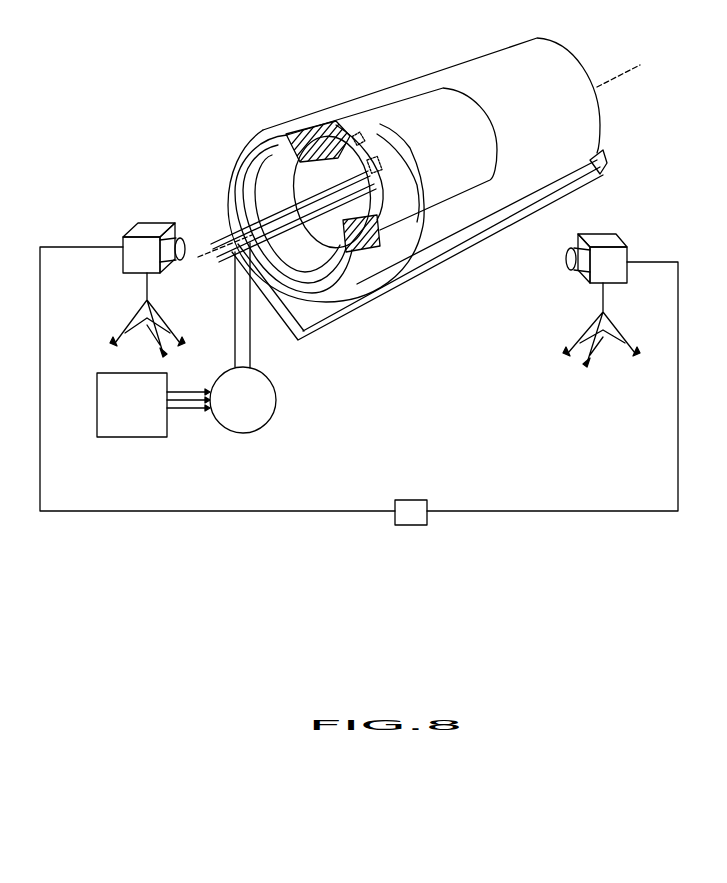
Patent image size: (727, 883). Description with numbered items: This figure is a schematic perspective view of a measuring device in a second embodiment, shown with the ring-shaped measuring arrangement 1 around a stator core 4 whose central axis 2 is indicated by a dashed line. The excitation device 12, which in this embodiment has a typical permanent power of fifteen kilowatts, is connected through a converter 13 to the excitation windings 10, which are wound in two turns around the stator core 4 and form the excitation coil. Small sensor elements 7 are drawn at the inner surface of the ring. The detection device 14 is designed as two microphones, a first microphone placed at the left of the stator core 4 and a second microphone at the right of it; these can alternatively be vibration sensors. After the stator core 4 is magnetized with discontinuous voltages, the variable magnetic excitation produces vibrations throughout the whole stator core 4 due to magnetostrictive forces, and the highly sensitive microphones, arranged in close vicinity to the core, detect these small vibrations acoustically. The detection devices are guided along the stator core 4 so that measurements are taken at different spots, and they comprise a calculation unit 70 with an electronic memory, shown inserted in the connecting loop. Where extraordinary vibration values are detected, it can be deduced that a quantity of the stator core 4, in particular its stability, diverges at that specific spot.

The ring assembly 1 is at (354, 224).
The axis 2 is at (617, 78).
The stator core 4 is at (460, 68).
The sensor elements 7 is at (352, 165).
The excitation windings 10 is at (240, 333).
The excitation device 12 is at (135, 420).
The converter 13 is at (272, 398).
The detection device 14 is at (150, 223).
The calculation unit 70 is at (423, 498).